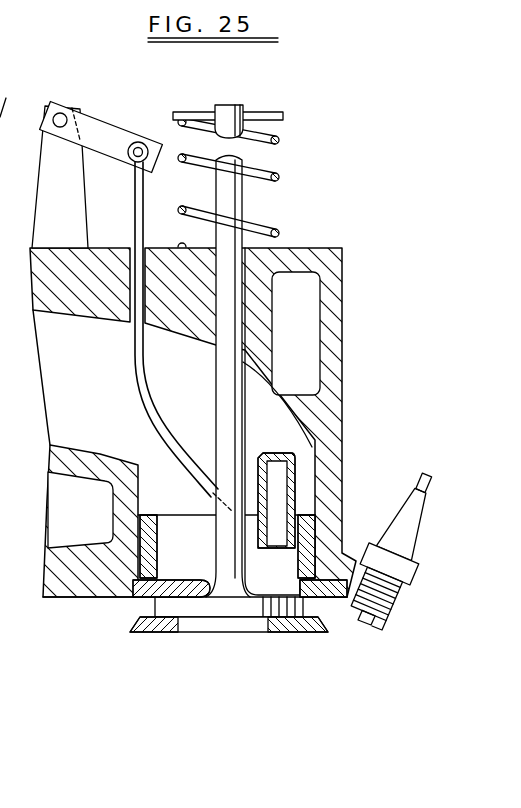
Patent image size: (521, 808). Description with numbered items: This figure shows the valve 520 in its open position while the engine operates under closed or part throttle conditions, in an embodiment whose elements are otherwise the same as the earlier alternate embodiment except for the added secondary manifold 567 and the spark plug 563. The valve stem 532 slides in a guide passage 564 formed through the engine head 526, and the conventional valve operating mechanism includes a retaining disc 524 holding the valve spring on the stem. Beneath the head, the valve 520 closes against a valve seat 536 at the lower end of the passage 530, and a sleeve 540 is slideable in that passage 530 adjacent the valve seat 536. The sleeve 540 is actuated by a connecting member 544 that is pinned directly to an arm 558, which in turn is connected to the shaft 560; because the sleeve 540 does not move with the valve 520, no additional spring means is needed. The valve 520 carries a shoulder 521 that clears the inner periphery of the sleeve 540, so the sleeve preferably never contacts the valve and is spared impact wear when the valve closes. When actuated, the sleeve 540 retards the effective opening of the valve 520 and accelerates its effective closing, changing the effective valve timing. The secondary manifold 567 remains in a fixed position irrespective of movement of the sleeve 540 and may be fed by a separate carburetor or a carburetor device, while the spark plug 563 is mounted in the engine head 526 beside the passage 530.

The valve 520 is at (155, 635).
The shoulder 521 is at (233, 607).
The retaining disc 524 is at (275, 112).
The engine head 526 is at (343, 325).
The passage 530 is at (108, 387).
The valve stem 532 is at (224, 380).
The valve seat 536 is at (140, 598).
The sleeve 540 is at (153, 517).
The connecting member 544 is at (150, 412).
The arm 558 is at (122, 118).
The shaft 560 is at (72, 108).
The spark plug 563 is at (397, 510).
The guide passage 564 is at (281, 545).
The secondary manifold 567 is at (277, 462).